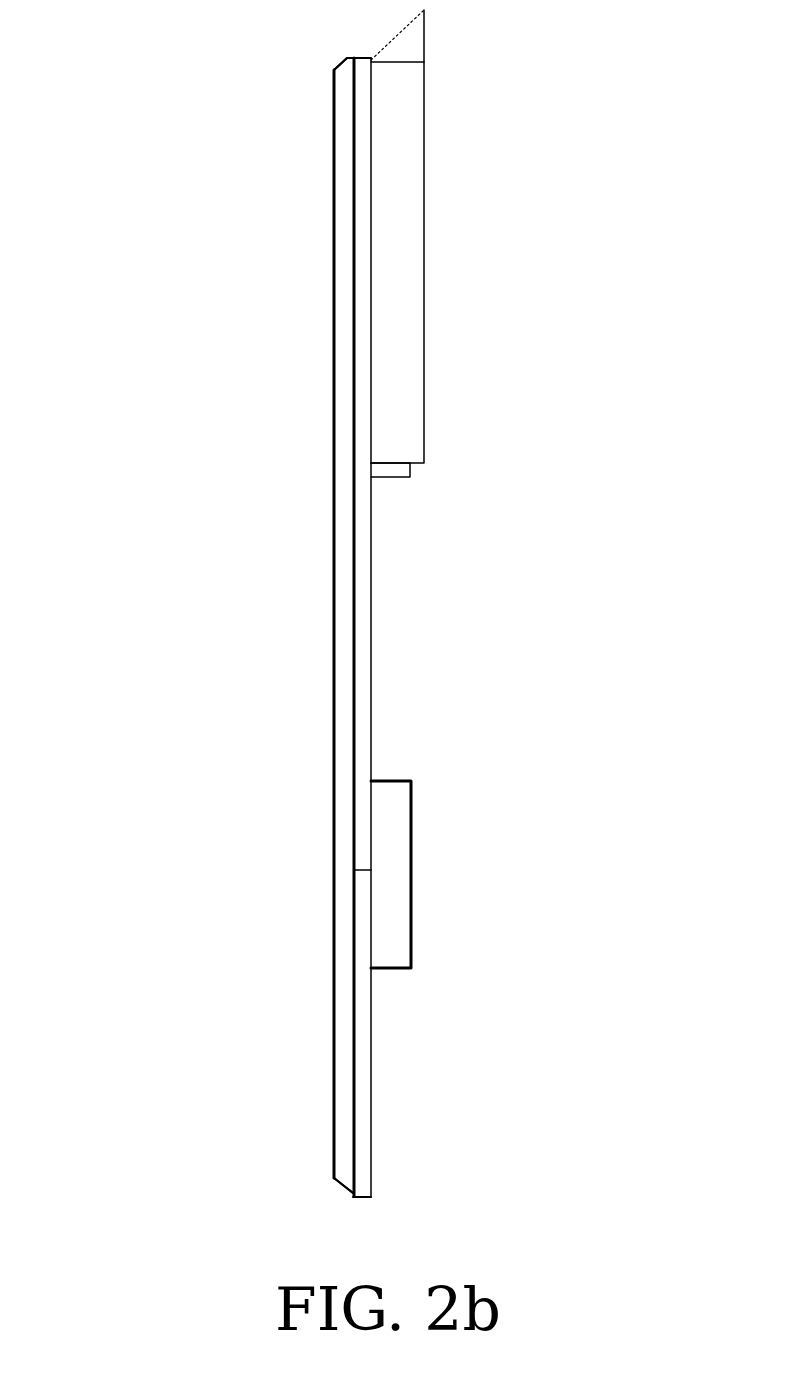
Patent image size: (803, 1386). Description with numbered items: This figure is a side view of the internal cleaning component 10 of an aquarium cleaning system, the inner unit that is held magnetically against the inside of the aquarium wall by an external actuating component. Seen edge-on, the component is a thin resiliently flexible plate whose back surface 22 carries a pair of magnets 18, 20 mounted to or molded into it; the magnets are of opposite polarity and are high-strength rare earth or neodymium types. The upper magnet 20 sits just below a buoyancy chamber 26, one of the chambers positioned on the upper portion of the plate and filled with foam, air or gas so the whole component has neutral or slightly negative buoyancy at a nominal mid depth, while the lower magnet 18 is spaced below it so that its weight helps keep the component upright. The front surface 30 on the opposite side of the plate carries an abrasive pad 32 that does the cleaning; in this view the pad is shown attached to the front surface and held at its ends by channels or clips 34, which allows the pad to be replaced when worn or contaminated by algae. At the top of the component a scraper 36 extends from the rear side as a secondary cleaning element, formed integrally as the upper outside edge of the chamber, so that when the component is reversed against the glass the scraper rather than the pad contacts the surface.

The internal cleaning component 10 is at (275, 718).
The magnet 18 is at (393, 874).
The magnet 20 is at (393, 478).
The back surface 22 is at (371, 701).
The chamber 26 is at (410, 255).
The front surface 30 is at (353, 340).
The abrasive pad 32 is at (333, 466).
The channels or clips 34 is at (335, 62).
The scraper 36 is at (405, 42).